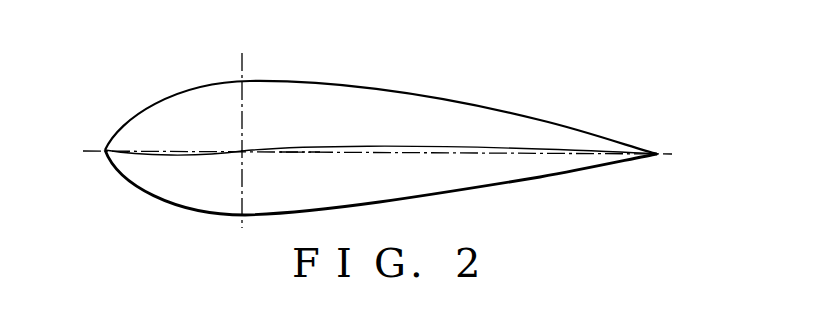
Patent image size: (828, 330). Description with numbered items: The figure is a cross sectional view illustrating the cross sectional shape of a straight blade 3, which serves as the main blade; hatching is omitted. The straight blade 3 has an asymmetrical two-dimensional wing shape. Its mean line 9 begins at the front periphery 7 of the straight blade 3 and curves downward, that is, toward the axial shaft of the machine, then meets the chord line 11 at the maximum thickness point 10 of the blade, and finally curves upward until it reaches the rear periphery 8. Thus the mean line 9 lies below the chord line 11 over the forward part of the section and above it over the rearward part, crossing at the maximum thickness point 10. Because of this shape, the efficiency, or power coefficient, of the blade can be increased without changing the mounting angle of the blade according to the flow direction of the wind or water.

The straight blade 3 is at (409, 82).
The front periphery 7 is at (105, 150).
The rear periphery 8 is at (657, 157).
The mean line 9 is at (373, 143).
The maximum thickness point 10 is at (242, 150).
The chord line 11 is at (300, 155).